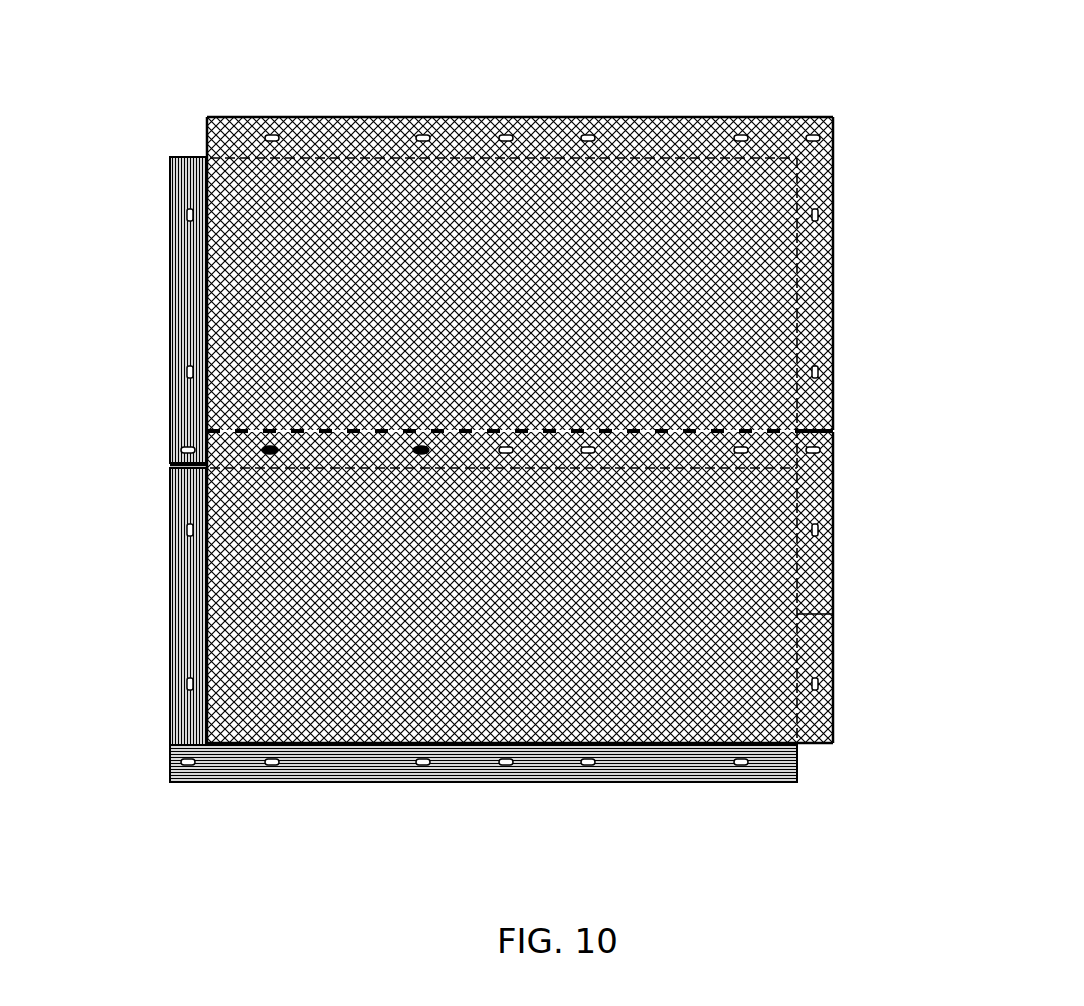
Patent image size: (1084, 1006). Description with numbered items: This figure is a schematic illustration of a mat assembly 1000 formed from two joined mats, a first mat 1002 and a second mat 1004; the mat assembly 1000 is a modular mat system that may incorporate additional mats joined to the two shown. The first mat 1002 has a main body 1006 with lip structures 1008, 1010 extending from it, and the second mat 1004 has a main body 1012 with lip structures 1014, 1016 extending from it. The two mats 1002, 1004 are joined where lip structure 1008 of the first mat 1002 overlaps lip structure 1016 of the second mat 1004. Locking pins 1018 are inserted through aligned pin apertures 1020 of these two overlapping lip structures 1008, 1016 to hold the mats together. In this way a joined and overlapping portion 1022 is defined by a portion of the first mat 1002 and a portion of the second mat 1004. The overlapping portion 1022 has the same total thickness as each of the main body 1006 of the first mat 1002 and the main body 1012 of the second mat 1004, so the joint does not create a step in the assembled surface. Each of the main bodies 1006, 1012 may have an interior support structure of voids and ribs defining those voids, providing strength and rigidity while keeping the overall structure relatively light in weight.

The mat assembly 1000 is at (866, 80).
The first mat 1002 is at (581, 239).
The second mat 1004 is at (585, 450).
The main body 1006 is at (550, 157).
The lip structure 1008 is at (182, 292).
The lip structure 1010 is at (648, 135).
The main body 1012 is at (833, 614).
The lip structure 1014 is at (342, 762).
The lip structure 1016 is at (818, 501).
The locking pin 1018 is at (416, 453).
The pin aperture 1020 is at (820, 215).
The overlapping portion 1022 is at (797, 440).